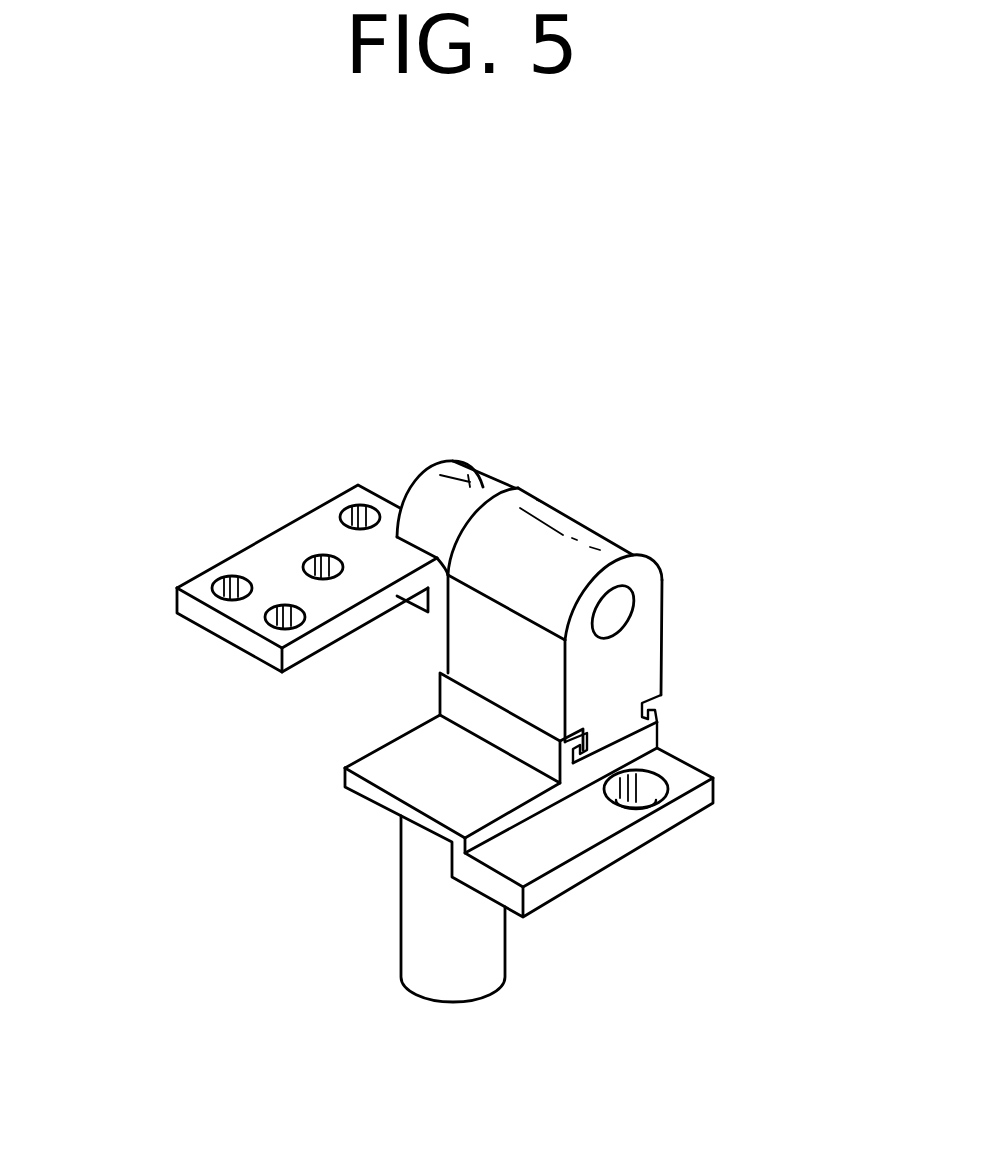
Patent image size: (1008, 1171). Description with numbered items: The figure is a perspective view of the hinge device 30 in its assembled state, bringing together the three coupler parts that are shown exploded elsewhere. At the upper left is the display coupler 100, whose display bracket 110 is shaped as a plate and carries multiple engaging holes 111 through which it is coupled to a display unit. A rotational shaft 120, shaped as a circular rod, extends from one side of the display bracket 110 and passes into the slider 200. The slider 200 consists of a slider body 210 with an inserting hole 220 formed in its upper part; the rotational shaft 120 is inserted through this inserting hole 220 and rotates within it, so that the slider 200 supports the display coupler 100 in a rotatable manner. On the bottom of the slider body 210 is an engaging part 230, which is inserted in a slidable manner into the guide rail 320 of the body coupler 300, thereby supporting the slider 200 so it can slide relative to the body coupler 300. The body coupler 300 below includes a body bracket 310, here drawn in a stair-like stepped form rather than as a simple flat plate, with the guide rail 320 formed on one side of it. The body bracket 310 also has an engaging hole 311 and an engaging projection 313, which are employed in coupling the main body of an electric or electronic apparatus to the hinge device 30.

The hinge device 30 is at (101, 362).
The display coupler 100 is at (497, 332).
The display bracket 110 is at (312, 504).
The engaging holes 111 is at (360, 505).
The rotational shaft 120 is at (462, 470).
The slider 200 is at (780, 593).
The slider body 210 is at (650, 652).
The inserting hole 220 is at (613, 602).
The engaging part 230 is at (657, 722).
The body coupler 300 is at (807, 755).
The body bracket 310 is at (571, 816).
The engaging hole 311 is at (692, 805).
The engaging projection 313 is at (473, 933).
The guide rail 320 is at (660, 750).